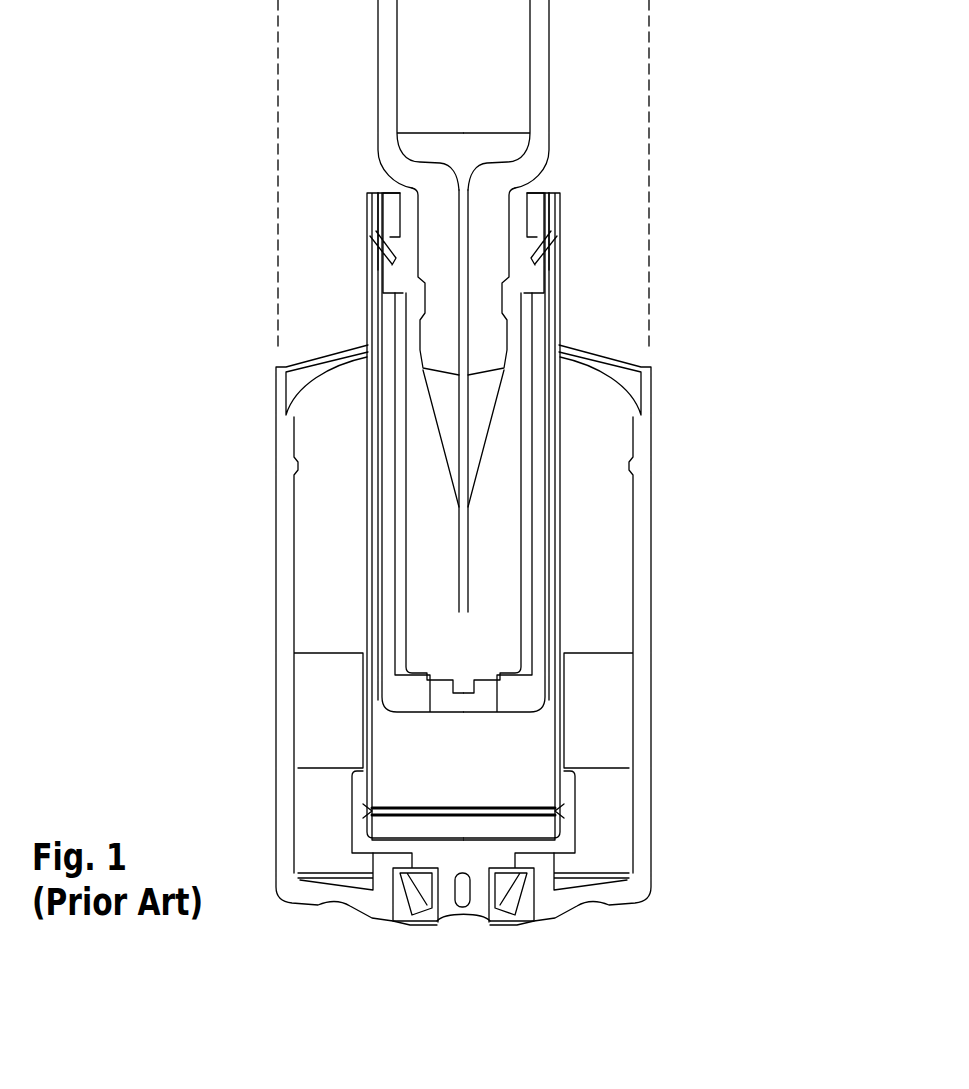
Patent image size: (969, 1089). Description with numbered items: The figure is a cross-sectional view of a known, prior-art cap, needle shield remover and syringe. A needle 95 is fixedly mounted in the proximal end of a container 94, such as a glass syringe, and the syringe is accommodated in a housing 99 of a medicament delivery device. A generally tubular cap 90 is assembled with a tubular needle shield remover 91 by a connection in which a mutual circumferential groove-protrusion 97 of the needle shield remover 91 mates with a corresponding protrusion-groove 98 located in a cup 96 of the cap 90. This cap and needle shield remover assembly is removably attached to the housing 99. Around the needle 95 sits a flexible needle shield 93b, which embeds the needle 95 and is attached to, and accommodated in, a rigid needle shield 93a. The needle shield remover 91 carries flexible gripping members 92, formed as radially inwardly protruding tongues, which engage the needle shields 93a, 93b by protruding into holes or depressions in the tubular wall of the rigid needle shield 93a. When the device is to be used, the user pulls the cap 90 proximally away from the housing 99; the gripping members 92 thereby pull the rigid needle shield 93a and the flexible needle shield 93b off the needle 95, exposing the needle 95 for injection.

The cap 90 is at (640, 808).
The needle shield remover 91 is at (557, 738).
The flexible gripping members 92 is at (555, 241).
The rigid needle shield 93a is at (535, 580).
The flexible needle shield 93b is at (508, 448).
The container 94 is at (480, 243).
The needle 95 is at (460, 517).
The cup 96 is at (352, 842).
The circumferential groove-protrusion 97 is at (403, 807).
The protrusion-groove 98 is at (560, 810).
The housing 99 is at (278, 253).